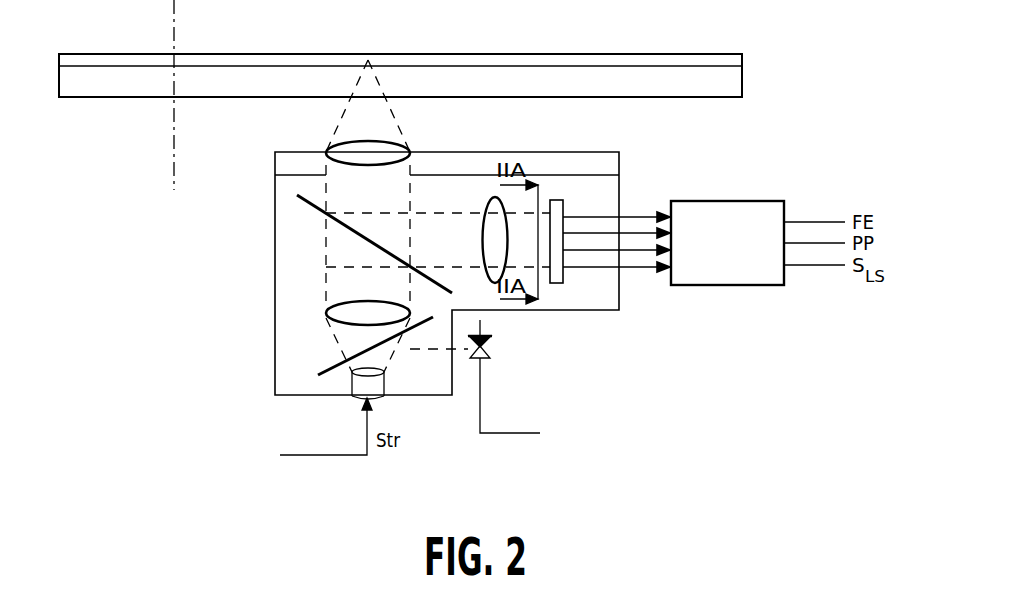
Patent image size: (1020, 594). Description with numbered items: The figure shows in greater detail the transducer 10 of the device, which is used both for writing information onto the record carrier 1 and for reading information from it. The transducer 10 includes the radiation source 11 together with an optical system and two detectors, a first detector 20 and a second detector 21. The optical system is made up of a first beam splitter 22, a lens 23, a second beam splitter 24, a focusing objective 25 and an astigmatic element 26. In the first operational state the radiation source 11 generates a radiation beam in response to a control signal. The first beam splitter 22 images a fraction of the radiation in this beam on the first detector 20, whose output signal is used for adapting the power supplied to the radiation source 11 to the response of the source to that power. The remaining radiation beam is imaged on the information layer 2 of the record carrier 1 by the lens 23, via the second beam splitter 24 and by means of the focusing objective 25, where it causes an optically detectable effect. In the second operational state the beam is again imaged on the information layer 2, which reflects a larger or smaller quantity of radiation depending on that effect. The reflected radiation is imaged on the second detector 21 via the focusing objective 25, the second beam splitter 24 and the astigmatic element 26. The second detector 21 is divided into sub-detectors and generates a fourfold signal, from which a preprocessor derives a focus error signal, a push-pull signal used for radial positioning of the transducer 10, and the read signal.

The record carrier 1 is at (349, 46).
The information layer 2 is at (249, 62).
The transducer 10 is at (208, 407).
The radiation source 11 is at (359, 399).
The first detector 20 is at (486, 358).
The second detector 21 is at (558, 285).
The first beam splitter 22 is at (318, 371).
The lens 23 is at (326, 313).
The second beam splitter 24 is at (307, 203).
The focusing objective 25 is at (327, 152).
The astigmatic element 26 is at (494, 196).